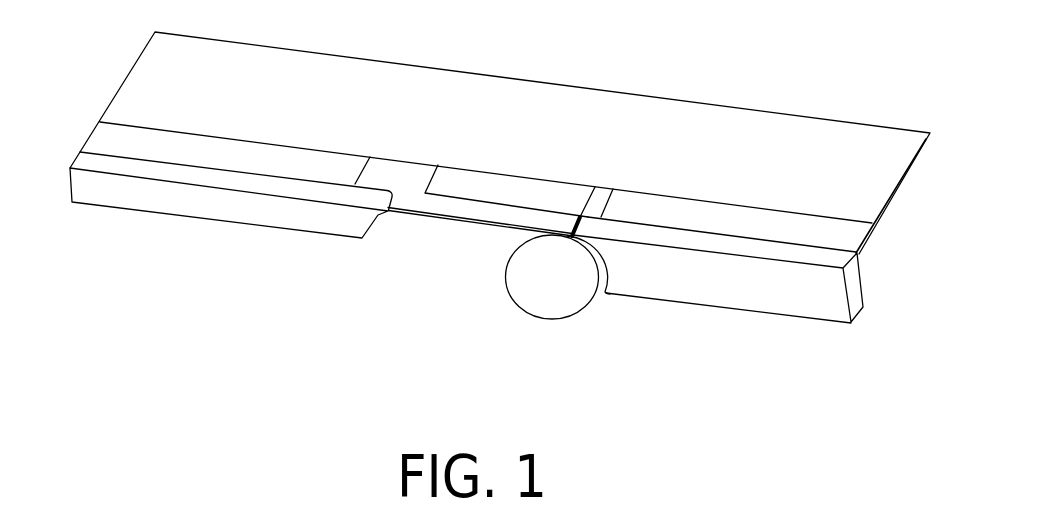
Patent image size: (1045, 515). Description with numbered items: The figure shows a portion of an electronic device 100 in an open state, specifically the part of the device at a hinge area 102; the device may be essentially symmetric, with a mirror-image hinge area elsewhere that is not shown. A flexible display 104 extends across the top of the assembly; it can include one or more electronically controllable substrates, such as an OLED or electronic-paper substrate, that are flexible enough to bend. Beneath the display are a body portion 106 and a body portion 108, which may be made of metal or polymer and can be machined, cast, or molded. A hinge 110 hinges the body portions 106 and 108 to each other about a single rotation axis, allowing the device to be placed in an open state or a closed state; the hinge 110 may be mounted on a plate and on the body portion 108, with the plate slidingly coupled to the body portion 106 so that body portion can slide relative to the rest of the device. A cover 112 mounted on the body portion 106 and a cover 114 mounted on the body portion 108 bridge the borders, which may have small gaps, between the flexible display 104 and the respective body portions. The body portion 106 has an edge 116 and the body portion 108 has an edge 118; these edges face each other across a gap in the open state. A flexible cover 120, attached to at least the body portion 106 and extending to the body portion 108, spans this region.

The electronic device 100 is at (489, 212).
The hinge area 102 is at (388, 271).
The flexible display 104 is at (507, 105).
The body portion 106 is at (147, 213).
The body portion 108 is at (722, 315).
The hinge 110 is at (556, 287).
The cover 112 is at (102, 140).
The cover 114 is at (838, 233).
The edge 116 is at (384, 211).
The edge 118 is at (570, 235).
The flexible cover 120 is at (383, 177).